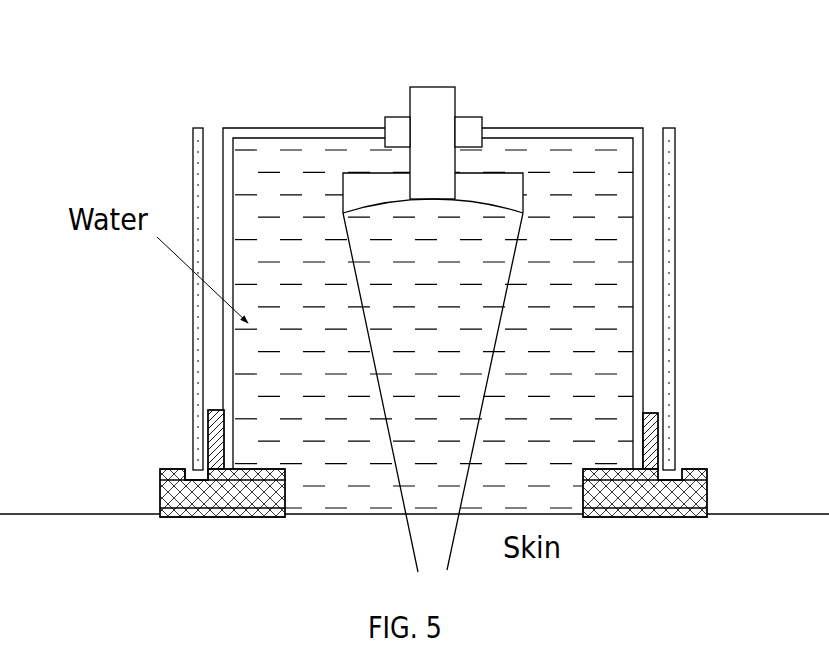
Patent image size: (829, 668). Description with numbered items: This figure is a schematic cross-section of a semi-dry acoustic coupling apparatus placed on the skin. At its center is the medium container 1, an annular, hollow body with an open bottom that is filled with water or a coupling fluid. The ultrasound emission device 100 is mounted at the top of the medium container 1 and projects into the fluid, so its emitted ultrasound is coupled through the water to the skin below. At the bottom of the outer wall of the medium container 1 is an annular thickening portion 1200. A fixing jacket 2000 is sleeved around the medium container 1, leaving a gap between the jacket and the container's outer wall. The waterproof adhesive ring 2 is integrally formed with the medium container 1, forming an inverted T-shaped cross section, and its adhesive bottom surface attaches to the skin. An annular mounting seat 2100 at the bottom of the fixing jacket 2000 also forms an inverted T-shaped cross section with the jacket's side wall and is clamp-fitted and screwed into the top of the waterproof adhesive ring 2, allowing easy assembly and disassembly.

The medium container 1 is at (322, 128).
The ultrasound emission device 100 is at (447, 102).
The fixing jacket 2000 is at (198, 218).
The annular thickening portion 1200 is at (652, 440).
The waterproof adhesive ring 2 is at (195, 513).
The annular mounting seat 2100 is at (195, 473).